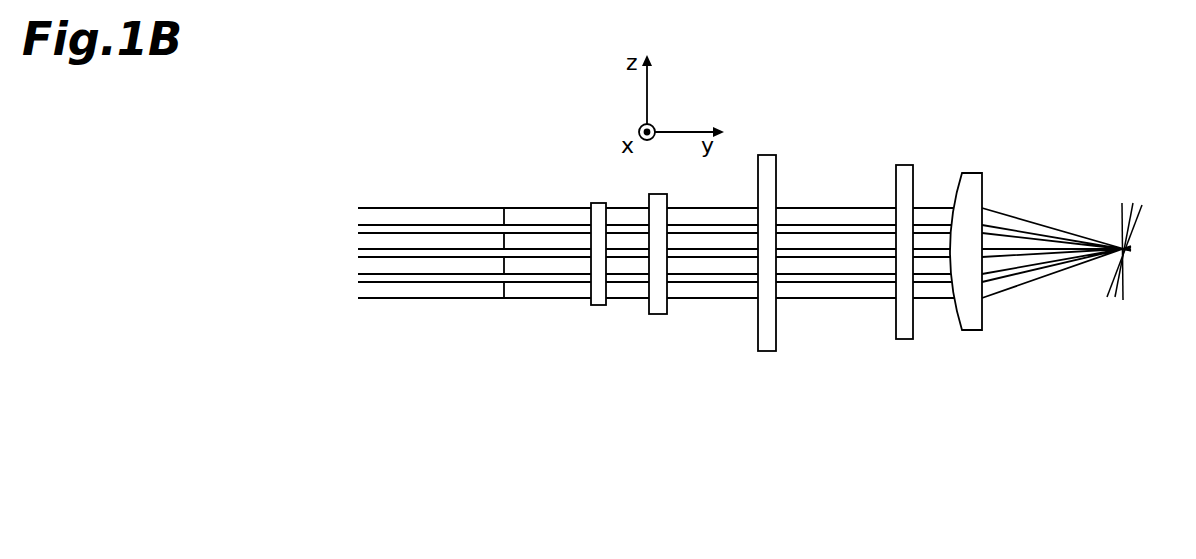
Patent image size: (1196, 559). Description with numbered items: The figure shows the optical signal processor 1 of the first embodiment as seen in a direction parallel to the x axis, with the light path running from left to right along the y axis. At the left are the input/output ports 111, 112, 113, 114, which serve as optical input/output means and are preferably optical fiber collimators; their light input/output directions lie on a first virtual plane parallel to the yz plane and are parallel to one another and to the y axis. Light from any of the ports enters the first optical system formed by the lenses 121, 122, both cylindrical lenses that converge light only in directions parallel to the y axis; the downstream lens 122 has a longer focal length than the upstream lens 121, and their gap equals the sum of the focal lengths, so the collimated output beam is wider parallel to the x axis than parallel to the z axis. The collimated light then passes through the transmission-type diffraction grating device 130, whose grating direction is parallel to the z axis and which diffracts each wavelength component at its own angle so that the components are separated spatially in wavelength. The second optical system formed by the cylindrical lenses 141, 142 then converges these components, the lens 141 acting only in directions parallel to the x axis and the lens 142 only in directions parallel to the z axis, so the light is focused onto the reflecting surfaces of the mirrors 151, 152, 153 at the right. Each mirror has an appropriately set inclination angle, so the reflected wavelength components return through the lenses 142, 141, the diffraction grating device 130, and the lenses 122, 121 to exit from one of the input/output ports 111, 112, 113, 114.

The optical signal processor 1 is at (497, 147).
The input/output port 111 is at (358, 216).
The input/output port 112 is at (358, 241).
The input/output port 113 is at (358, 266).
The input/output port 114 is at (358, 292).
The lens 121 is at (597, 305).
The lens 122 is at (656, 314).
The diffraction grating device 130 is at (767, 351).
The lens 141 is at (905, 339).
The lens 142 is at (972, 330).
The mirror 151 is at (1126, 302).
The mirror 152 is at (1124, 250).
The mirror 153 is at (1124, 251).